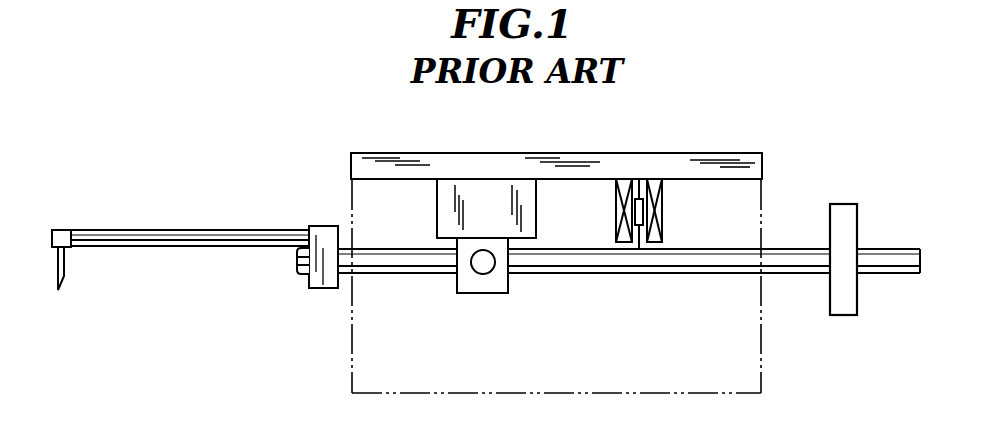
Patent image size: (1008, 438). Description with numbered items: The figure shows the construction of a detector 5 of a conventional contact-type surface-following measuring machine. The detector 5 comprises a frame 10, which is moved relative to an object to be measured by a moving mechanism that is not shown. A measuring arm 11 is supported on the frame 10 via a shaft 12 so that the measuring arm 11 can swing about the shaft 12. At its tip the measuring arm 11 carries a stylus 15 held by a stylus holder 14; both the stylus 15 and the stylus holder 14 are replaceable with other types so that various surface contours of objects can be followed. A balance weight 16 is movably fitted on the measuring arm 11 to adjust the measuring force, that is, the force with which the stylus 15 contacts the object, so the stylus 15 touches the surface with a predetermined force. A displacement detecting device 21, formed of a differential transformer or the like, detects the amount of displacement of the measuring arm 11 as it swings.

The detector 5 is at (762, 333).
The frame 10 is at (552, 153).
The measuring arm 11 is at (398, 266).
The shaft 12 is at (485, 268).
The stylus holder 14 is at (203, 241).
The stylus 15 is at (64, 278).
The balance weight 16 is at (857, 295).
The displacement detecting device 21 is at (639, 180).